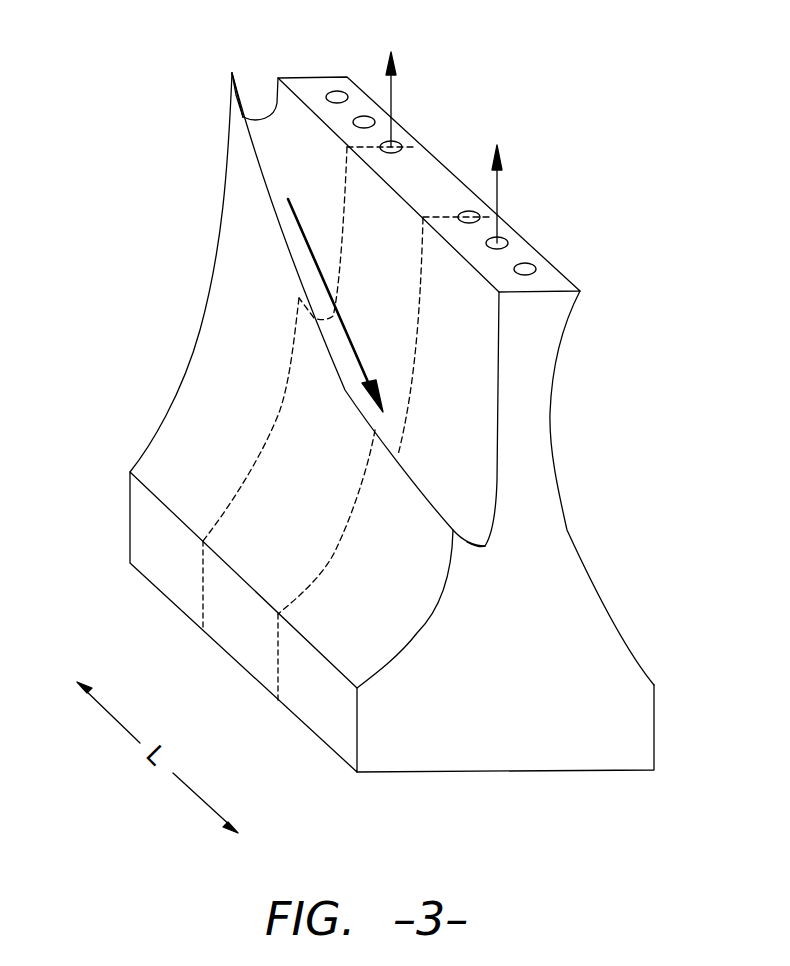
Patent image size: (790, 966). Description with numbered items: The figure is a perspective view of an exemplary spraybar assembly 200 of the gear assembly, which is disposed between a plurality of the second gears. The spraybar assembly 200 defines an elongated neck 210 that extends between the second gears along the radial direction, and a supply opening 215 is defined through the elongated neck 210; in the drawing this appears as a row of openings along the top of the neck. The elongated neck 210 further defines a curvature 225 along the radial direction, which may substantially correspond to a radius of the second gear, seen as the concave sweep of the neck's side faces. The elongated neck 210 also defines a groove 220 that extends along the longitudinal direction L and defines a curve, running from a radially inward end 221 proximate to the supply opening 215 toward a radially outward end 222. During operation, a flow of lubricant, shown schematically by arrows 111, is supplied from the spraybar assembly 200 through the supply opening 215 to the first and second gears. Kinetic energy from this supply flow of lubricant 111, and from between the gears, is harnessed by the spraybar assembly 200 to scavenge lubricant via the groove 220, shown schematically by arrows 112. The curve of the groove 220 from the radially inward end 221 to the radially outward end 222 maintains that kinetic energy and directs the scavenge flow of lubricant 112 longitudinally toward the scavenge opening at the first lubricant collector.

The spraybar assembly 200 is at (605, 240).
The elongated neck 210 is at (562, 497).
The groove 220 is at (402, 475).
The radially inward end 221 is at (232, 73).
The radially outward end 222 is at (477, 553).
The curvature 225 is at (553, 410).
The supply opening 215 is at (337, 92).
The flow of lubricant 111 is at (502, 190).
The scavenge flow of lubricant 112 is at (297, 240).